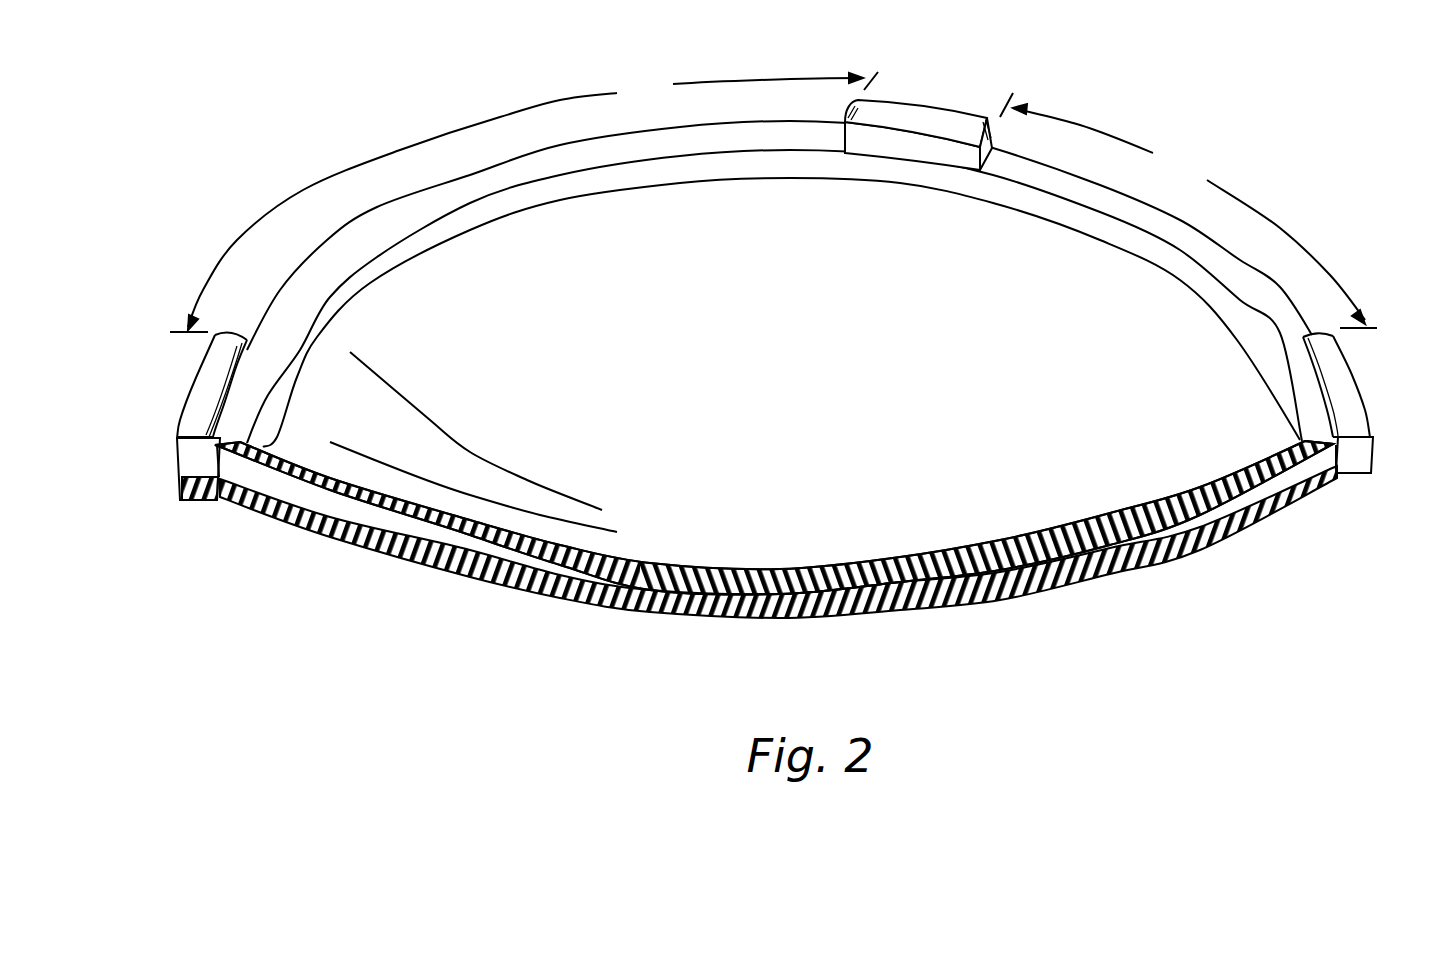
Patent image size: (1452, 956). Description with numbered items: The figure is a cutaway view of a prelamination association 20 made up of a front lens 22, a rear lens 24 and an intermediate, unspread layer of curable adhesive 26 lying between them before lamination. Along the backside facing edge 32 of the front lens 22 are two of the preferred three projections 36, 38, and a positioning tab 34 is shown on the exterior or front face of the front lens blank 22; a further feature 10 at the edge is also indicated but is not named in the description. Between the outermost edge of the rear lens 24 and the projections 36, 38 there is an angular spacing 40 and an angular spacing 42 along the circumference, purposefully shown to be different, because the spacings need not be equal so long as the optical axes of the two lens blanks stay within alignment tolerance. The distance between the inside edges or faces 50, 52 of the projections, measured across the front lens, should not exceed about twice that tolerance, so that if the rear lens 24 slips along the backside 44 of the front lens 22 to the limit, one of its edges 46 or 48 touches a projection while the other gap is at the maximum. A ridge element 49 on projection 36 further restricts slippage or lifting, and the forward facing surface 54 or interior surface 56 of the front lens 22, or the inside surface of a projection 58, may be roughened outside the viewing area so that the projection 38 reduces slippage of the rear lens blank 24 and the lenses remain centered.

The insert component 10 is at (913, 110).
The prelamination association 20 is at (1192, 657).
The front lens 22 is at (993, 598).
The rear lens 24 is at (458, 220).
The intermediate, unspread layer of curable adhesive 26 is at (648, 595).
The backside facing edge 32 is at (1248, 287).
The positioning tab 34 is at (190, 502).
The projection 36 is at (193, 395).
The projection 38 is at (1357, 408).
The angular spacing 40 is at (1188, 210).
The angular spacing 42 is at (524, 201).
The backside 44 is at (1207, 500).
The edge 46 is at (1335, 473).
The edge 48 is at (220, 450).
The ridge element 49 is at (236, 381).
The inside edge or face 50 is at (218, 474).
The inside edge or face 52 is at (1330, 462).
The forward facing surface 54 is at (352, 503).
The interior surface 56 is at (390, 553).
The inside surface of a projection 58 is at (1323, 388).